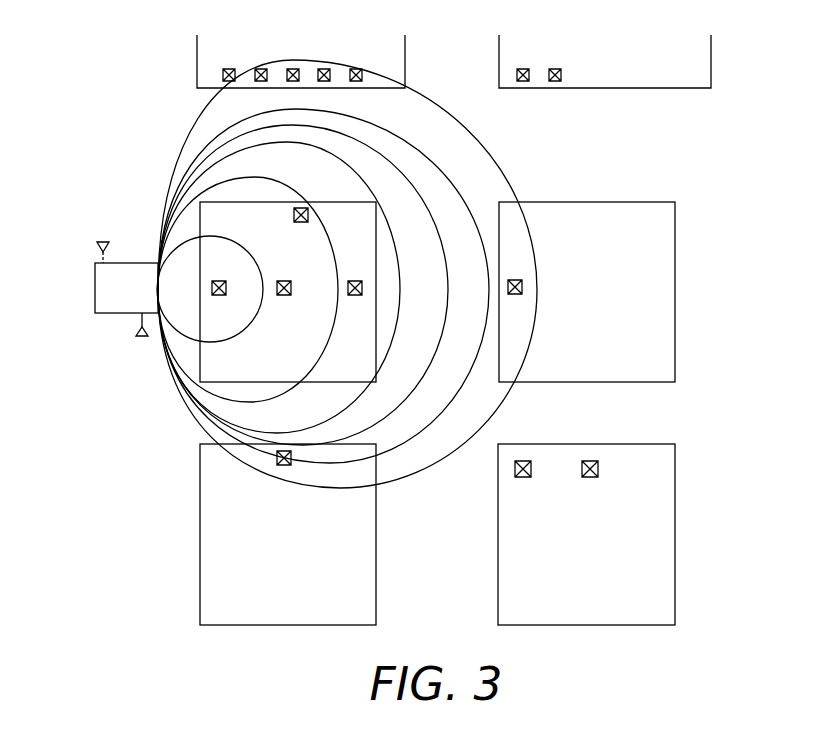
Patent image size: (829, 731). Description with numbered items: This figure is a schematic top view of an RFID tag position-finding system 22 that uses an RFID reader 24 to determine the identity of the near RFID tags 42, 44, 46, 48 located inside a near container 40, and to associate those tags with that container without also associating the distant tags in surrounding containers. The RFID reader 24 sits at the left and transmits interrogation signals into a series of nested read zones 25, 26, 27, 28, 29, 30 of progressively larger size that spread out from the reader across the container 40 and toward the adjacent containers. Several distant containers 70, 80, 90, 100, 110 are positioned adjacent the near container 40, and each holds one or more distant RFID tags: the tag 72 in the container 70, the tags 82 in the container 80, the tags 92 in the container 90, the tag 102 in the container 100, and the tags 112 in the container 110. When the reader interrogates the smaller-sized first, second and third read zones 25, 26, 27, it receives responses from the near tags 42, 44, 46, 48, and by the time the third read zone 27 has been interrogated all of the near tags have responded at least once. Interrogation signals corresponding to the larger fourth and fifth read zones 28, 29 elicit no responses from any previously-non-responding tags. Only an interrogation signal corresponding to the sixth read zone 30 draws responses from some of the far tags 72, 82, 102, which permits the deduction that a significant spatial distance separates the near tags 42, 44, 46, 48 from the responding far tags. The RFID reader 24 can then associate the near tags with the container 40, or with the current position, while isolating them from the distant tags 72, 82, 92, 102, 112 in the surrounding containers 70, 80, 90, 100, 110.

The RFID system 22 is at (108, 96).
The RFID reader 24 is at (95, 290).
The first read zone 25 is at (183, 243).
The second read zone 26 is at (183, 203).
The third read zone 27 is at (192, 180).
The fourth read zone 28 is at (205, 160).
The fifth read zone 29 is at (212, 140).
The sixth read zone 30 is at (183, 110).
The container 40 is at (215, 360).
The near RFID tag 42 is at (213, 282).
The near RFID tag 44 is at (284, 296).
The near RFID tag 46 is at (355, 296).
The near RFID tag 48 is at (294, 215).
The distant container 70 is at (585, 202).
The distant RFID tag 72 is at (515, 280).
The distant container 80 is at (405, 73).
The distant RFID tag 82 is at (229, 69).
The distant container 90 is at (499, 45).
The distant RFID tag 92 is at (523, 69).
The distant container 100 is at (200, 535).
The distant RFID tag 102 is at (284, 466).
The distant container 110 is at (498, 535).
The distant RFID tag 112 is at (523, 478).